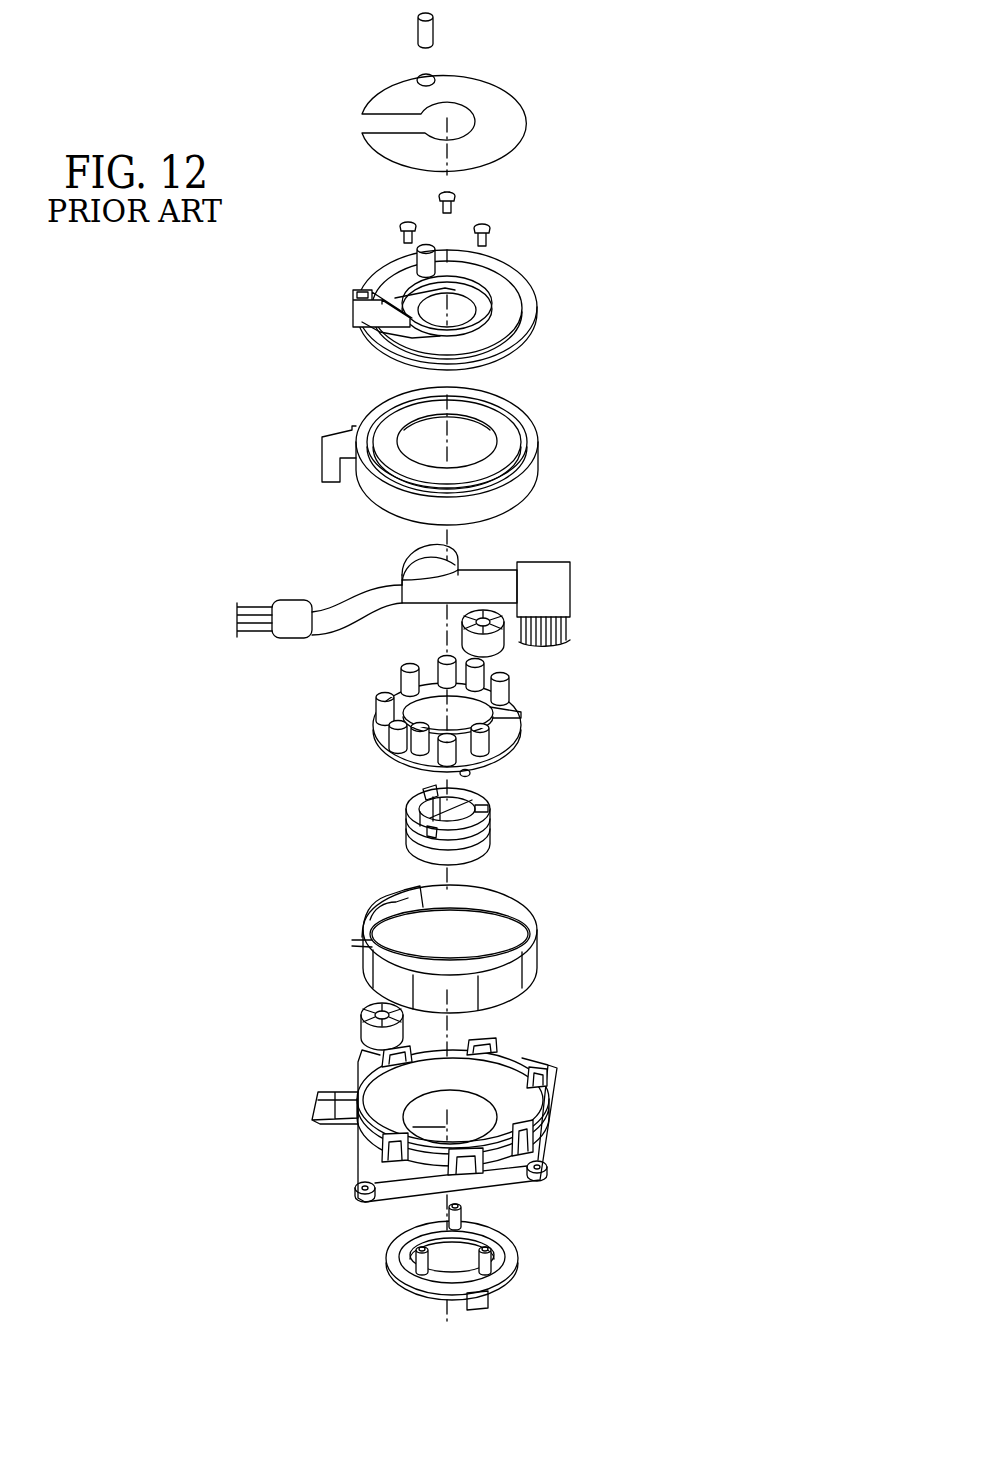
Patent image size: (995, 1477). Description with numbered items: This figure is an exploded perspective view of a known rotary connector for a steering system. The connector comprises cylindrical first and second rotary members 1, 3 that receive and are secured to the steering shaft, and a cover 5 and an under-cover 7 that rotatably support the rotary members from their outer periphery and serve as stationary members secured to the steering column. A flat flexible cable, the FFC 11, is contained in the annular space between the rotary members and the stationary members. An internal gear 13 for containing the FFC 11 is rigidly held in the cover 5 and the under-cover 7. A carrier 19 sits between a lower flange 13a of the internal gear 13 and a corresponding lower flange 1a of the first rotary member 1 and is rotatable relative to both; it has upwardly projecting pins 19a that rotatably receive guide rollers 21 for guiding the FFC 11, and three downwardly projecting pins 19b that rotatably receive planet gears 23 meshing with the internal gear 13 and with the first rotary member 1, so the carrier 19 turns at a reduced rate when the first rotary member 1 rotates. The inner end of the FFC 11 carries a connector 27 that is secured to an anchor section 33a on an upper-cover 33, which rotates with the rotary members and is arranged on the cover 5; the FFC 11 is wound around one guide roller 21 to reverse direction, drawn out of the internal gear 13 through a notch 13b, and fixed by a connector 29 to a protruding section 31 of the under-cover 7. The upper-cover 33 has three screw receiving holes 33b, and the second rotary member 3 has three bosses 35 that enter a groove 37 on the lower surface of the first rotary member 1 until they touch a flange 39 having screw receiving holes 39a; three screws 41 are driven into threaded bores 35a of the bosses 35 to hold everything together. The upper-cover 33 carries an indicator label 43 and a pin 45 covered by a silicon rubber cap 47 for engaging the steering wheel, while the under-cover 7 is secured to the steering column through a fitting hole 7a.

The cap 47 is at (430, 34).
The indicator label 43 is at (530, 125).
The screws 41 is at (456, 193).
The pin 45 is at (415, 262).
The upper-cover 33 is at (538, 296).
The anchor section 33a is at (353, 312).
The screw receiving holes 33b is at (430, 290).
The cover 5 is at (528, 415).
The connector 27 is at (290, 600).
The FFC 11 is at (500, 568).
The connector 29 is at (572, 575).
The guide rollers 21 is at (462, 640).
The carrier 19 is at (446, 720).
The upwardly projecting pins 19a is at (398, 682).
The downwardly projecting pins 19b is at (472, 788).
The flange 39 is at (430, 790).
The groove 37 is at (455, 812).
The screw receiving holes 39a is at (410, 803).
The first rotary member 1 is at (453, 826).
The lower flange 1a is at (494, 845).
The internal gear 13 is at (448, 949).
The notch 13b is at (393, 905).
The lower flange 13a is at (362, 942).
The planet gears 23 is at (362, 1022).
The under-cover 7 is at (452, 1114).
The protruding section 31 is at (313, 1110).
The fitting hole 7a is at (547, 1167).
The bosses 35 is at (448, 1215).
The threaded bores 35a is at (459, 1206).
The second rotary member 3 is at (467, 1265).